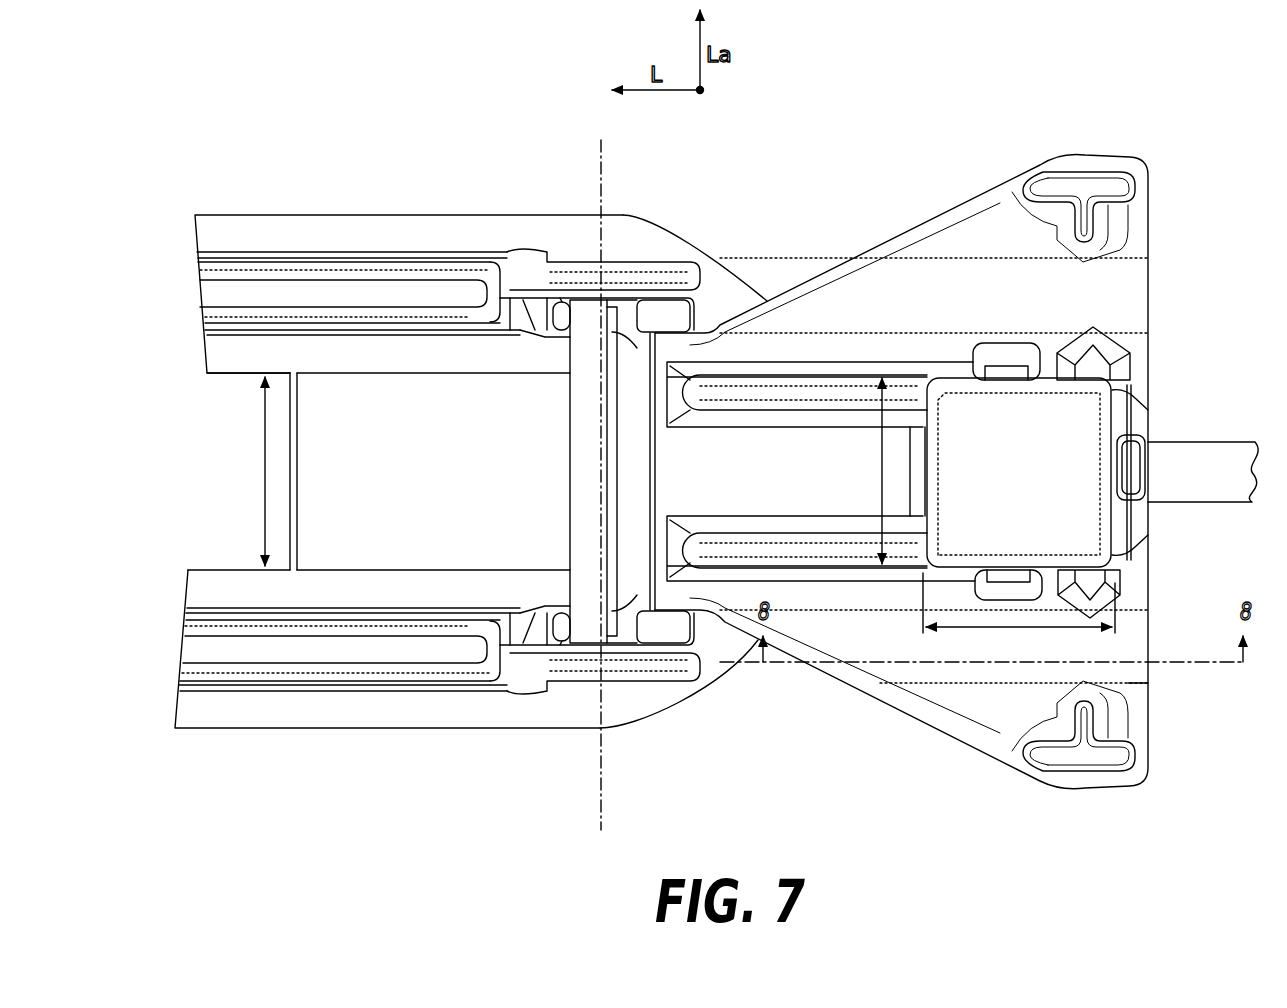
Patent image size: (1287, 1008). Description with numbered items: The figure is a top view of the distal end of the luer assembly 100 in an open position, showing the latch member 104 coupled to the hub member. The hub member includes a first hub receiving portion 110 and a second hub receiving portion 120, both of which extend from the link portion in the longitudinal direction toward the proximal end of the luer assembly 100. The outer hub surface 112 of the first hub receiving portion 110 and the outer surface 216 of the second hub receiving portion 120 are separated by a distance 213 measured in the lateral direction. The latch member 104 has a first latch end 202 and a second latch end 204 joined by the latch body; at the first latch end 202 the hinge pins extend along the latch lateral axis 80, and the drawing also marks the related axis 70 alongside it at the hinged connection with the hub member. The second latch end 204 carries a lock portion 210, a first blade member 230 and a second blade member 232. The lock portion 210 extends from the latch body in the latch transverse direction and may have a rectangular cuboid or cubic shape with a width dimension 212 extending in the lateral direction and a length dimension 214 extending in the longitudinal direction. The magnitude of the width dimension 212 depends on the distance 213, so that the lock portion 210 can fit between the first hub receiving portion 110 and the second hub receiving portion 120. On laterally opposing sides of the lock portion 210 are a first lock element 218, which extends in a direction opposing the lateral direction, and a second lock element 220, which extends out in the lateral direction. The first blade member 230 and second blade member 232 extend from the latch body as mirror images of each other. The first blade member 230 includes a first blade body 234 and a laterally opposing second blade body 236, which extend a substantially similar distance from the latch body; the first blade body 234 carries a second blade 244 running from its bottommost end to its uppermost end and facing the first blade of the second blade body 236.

The luer assembly 100 is at (438, 104).
The second hub receiving portion 120 is at (266, 208).
The first hub receiving portion 110 is at (292, 733).
The outer hub surface 112 is at (218, 568).
The outer surface 216 is at (218, 375).
The distance 213 is at (265, 470).
The first latch end 202 is at (563, 455).
The clamp 70 is at (603, 188).
The latch lateral axis 80 is at (651, 471).
The latch member 104 is at (840, 257).
The second blade member 232 is at (1125, 183).
The second lock element 220 is at (1000, 363).
The width dimension 212 is at (880, 466).
The lock portion 210 is at (1074, 442).
The second blade body 236 is at (1022, 603).
The first lock element 218 is at (1012, 565).
The second latch end 204 is at (1154, 590).
The first blade member 230 is at (1124, 599).
The first blade body 234 is at (1098, 775).
The second blade 244 is at (1150, 688).
The length dimension 214 is at (963, 630).